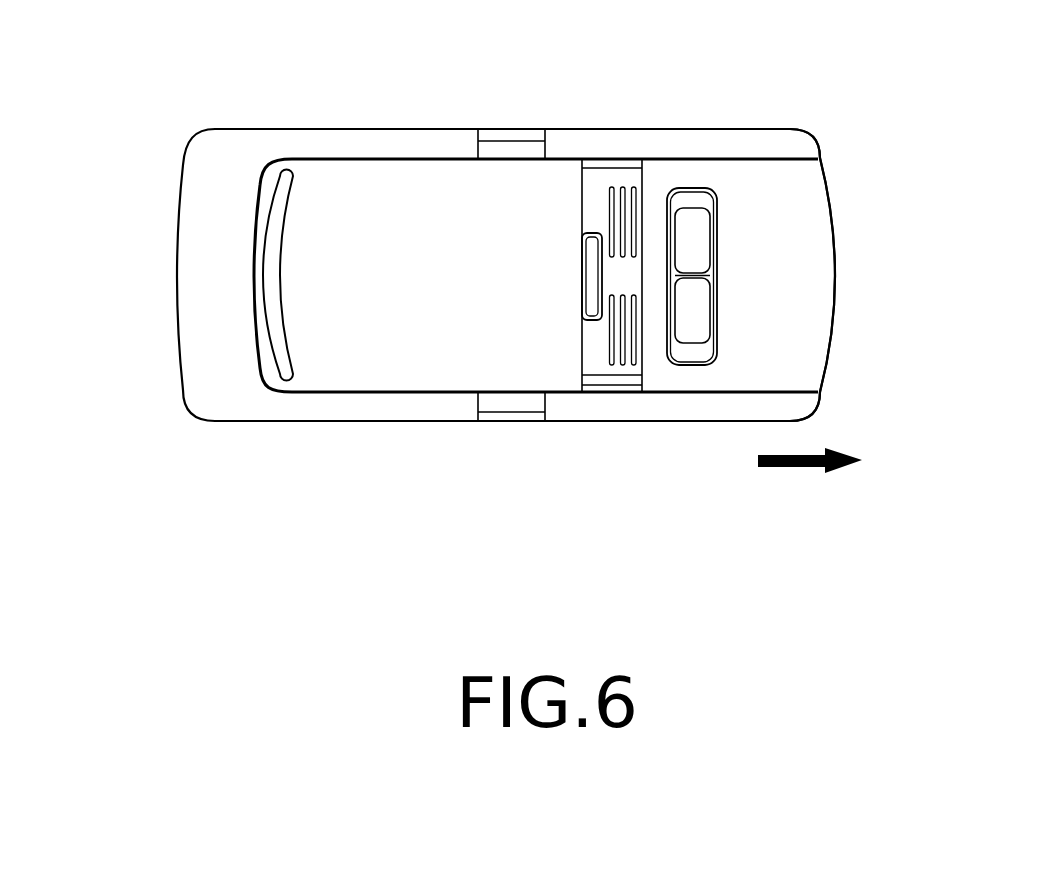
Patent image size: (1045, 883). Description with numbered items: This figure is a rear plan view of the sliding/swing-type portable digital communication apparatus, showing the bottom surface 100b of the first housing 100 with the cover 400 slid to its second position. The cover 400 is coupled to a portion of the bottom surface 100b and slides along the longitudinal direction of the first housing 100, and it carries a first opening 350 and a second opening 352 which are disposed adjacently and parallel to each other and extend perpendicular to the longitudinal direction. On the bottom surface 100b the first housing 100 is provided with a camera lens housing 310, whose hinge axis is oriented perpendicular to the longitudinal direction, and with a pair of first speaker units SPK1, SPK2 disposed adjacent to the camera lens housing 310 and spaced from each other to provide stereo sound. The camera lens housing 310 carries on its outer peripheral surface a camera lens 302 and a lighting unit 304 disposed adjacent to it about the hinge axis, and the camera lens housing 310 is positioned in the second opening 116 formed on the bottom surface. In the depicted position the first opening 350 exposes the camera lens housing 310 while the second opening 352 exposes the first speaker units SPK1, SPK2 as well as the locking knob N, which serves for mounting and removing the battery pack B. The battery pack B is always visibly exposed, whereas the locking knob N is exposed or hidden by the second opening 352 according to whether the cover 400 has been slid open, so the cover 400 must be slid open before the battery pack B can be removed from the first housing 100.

The first housing 100 is at (160, 327).
The bottom surface 100b is at (202, 203).
The battery pack B is at (372, 370).
The locking knob N is at (587, 248).
The first speaker unit SPK1 is at (620, 185).
The first speaker unit SPK2 is at (610, 367).
The second opening 352 is at (645, 177).
The camera lens 302 is at (716, 188).
The second opening 116 is at (717, 327).
The first opening 350 is at (695, 224).
The lighting unit 304 is at (692, 332).
The camera lens housing 310 is at (722, 275).
The cover 400 is at (840, 166).